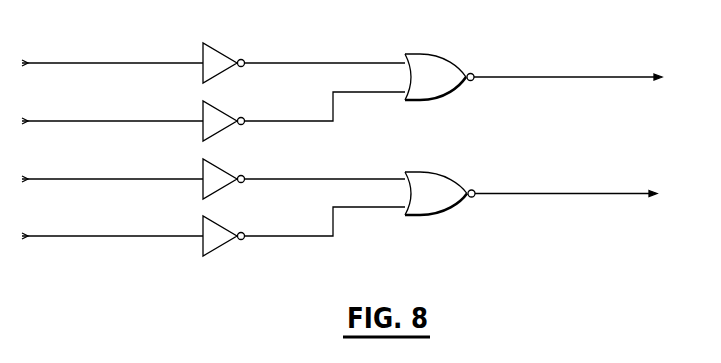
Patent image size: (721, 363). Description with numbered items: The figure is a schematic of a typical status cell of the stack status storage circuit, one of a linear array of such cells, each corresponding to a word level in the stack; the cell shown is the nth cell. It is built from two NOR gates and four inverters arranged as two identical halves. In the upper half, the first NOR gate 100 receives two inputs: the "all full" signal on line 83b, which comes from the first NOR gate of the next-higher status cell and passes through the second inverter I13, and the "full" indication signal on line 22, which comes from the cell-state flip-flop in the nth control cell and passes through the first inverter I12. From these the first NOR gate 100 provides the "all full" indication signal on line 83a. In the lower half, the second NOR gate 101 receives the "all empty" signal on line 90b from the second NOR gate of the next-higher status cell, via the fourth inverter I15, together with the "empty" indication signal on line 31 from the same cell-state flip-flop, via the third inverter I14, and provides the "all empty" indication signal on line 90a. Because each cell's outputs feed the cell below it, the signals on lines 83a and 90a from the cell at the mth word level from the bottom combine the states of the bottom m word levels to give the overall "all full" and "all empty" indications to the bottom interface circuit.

The line 83b is at (156, 62).
The line 22 is at (146, 120).
The second inverter I13 is at (212, 48).
The first inverter I12 is at (212, 106).
The first NOR gate 100 is at (437, 54).
The line 83a is at (630, 78).
The line 90b is at (157, 180).
The line 31 is at (140, 237).
The fourth inverter I15 is at (212, 164).
The third inverter I14 is at (212, 221).
The second NOR gate 101 is at (441, 173).
The line 90a is at (633, 194).